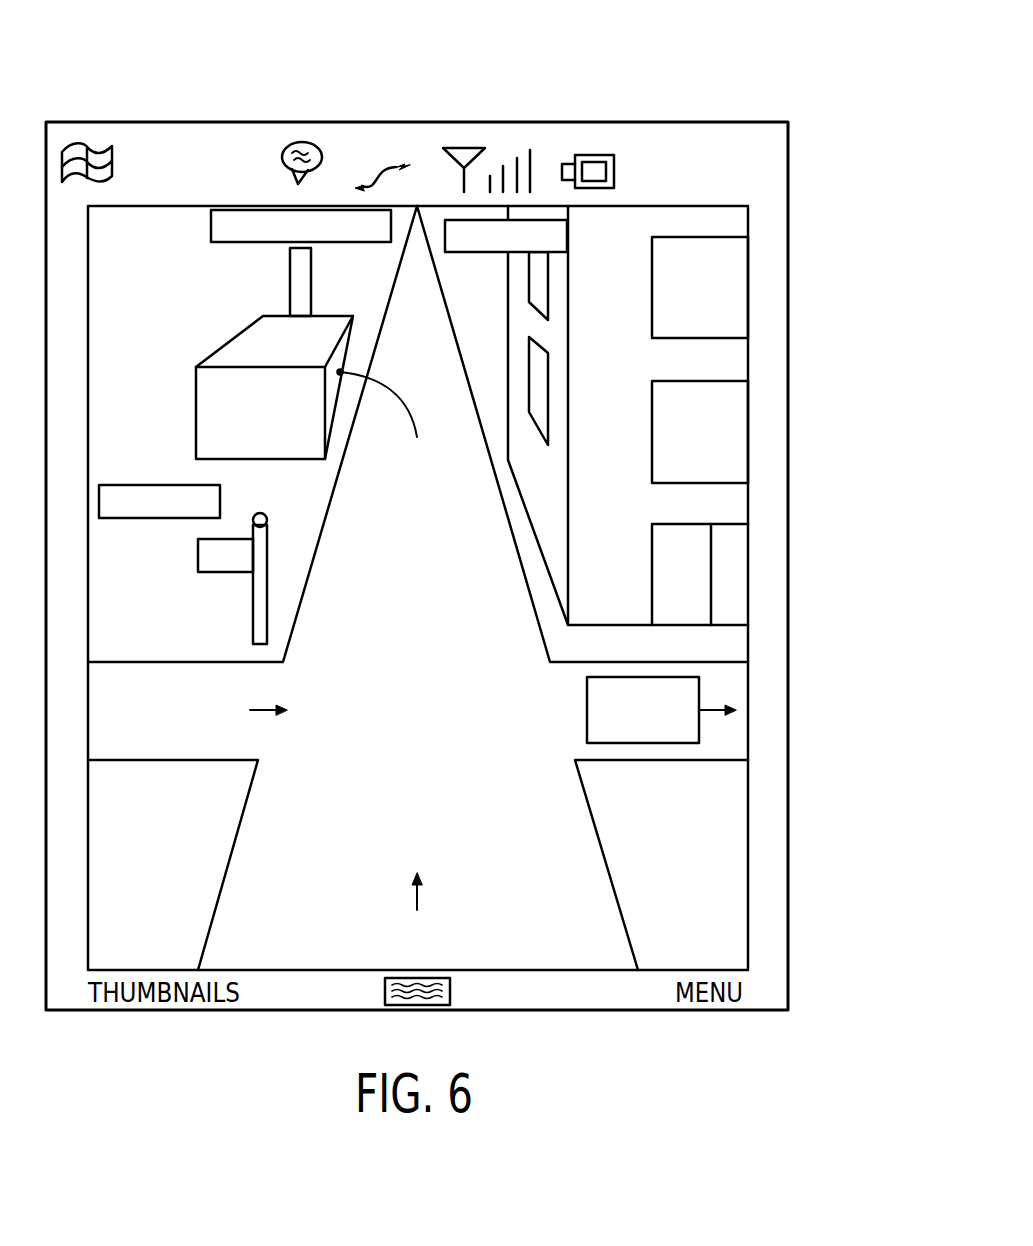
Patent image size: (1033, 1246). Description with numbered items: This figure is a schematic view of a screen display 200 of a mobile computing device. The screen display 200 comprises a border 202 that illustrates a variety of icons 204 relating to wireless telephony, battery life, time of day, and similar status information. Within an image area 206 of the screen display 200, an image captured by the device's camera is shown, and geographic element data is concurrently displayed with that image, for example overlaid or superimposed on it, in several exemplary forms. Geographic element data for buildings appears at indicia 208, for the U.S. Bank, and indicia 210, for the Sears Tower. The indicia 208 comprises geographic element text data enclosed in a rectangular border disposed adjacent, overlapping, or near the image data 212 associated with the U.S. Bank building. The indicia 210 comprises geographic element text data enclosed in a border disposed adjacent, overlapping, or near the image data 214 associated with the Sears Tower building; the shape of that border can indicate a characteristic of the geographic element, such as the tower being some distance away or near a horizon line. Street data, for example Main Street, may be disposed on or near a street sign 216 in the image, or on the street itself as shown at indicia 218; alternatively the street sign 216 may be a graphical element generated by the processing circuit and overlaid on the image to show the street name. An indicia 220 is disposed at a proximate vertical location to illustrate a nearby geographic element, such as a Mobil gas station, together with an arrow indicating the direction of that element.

The screen display 200 is at (616, 72).
The border 202 is at (778, 263).
The icons 204 is at (725, 160).
The image area 206 is at (745, 366).
The indicia 208 is at (492, 253).
The indicia 210 is at (240, 244).
The image data 212 is at (733, 505).
The image data / indicia 214 is at (300, 293).
The street sign 216 is at (226, 560).
The indicia 218 is at (178, 728).
The indicia 220 is at (587, 716).